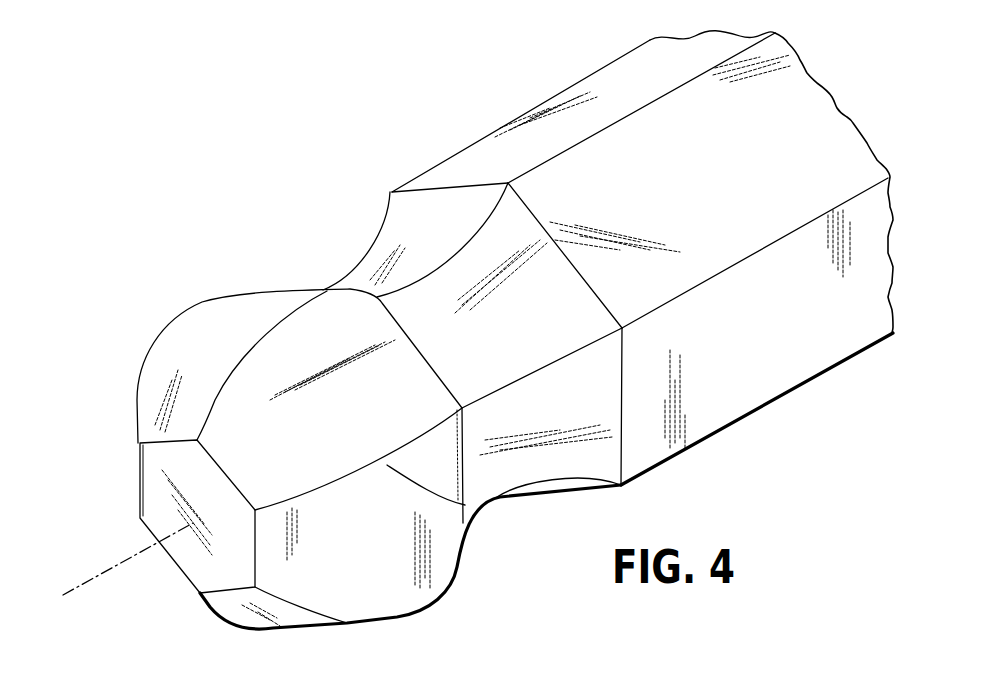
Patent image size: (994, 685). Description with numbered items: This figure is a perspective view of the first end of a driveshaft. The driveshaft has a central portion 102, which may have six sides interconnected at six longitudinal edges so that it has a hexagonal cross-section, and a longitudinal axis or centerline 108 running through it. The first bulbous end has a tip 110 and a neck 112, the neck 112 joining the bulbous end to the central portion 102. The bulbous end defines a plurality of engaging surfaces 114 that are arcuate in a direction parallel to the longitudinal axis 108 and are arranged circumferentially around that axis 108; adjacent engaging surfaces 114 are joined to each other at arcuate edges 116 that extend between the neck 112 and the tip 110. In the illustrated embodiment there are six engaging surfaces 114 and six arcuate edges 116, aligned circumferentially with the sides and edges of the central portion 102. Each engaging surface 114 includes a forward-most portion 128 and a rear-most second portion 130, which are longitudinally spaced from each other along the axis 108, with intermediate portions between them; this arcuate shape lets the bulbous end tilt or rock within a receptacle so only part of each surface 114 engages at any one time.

The central portion 102 is at (813, 133).
The longitudinal axis 108 is at (120, 562).
The tip 110 is at (193, 558).
The neck 112 is at (410, 253).
The engaging surfaces 114 is at (207, 320).
The arcuate edges 116 is at (465, 505).
The forward-most portion 128 is at (250, 421).
The rear-most second portion 130 is at (335, 383).